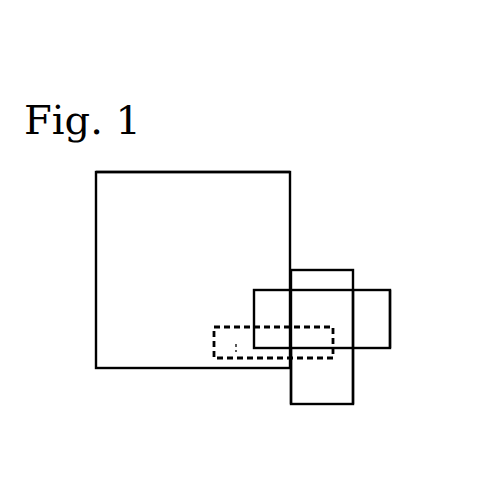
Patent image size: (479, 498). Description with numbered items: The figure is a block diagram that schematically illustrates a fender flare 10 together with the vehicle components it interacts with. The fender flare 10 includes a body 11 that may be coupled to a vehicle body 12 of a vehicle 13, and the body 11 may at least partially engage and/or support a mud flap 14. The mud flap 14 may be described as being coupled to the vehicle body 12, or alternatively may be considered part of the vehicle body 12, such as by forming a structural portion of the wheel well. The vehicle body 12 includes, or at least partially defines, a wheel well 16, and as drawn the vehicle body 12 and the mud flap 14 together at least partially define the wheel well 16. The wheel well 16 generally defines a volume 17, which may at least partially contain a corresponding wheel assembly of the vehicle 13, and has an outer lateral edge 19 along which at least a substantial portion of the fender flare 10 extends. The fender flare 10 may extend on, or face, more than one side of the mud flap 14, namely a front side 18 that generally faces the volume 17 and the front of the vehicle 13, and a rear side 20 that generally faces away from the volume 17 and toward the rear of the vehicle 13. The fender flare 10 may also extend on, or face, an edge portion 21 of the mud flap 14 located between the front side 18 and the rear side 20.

The fender flare 10 is at (391, 319).
The body 11 is at (373, 289).
The vehicle body 12 is at (232, 171).
The vehicle 13 is at (147, 173).
The mud flap 14 is at (337, 271).
The wheel well 16 is at (214, 347).
The volume 17 is at (236, 344).
The front side 18 is at (291, 386).
The outer lateral edge 19 is at (340, 342).
The rear side 20 is at (354, 372).
The edge portion 21 is at (337, 393).